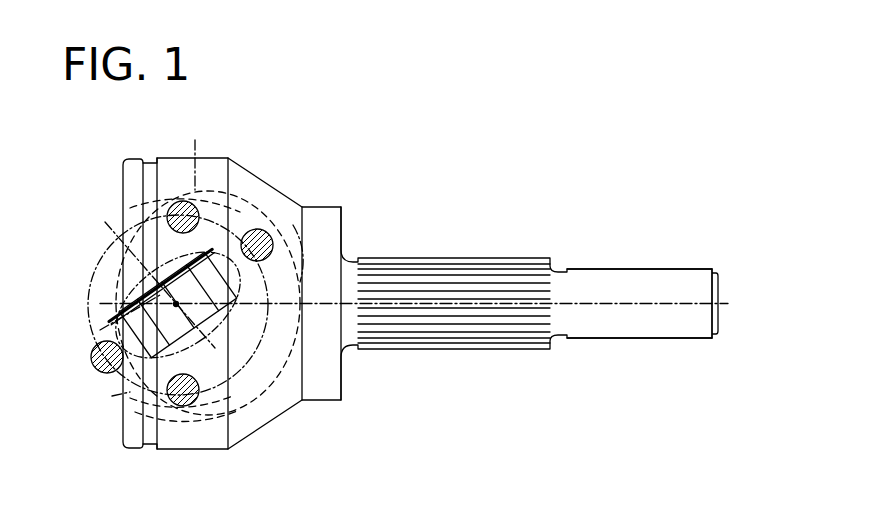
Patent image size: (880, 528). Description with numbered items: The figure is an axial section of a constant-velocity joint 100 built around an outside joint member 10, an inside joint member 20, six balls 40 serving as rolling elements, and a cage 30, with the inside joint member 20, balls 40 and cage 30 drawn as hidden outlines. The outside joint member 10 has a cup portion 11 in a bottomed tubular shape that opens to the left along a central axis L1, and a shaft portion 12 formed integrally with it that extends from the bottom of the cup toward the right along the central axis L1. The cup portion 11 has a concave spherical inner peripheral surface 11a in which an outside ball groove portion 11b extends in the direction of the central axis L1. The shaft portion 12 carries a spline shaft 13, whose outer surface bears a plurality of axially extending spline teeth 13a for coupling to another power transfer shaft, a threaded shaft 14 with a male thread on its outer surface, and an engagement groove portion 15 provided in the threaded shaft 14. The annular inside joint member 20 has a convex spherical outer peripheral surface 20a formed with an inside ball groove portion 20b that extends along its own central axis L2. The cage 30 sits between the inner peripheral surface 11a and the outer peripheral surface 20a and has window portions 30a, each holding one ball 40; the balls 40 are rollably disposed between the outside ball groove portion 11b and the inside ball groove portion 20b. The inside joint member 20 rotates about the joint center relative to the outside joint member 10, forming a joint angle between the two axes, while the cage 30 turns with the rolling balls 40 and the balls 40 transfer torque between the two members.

The constant-velocity joint 100 is at (651, 108).
The outside joint member 10 is at (654, 182).
The cup portion 11 is at (253, 183).
The inner peripheral surface 11a is at (303, 258).
The outside ball groove portion 11b is at (205, 425).
The shaft portion 12 is at (780, 234).
The spline shaft 13 is at (487, 246).
The spline teeth 13a is at (440, 350).
The threaded shaft 14 is at (629, 256).
The engagement groove portion 15 is at (688, 276).
The inside joint member 20 is at (191, 273).
The outer peripheral surface 20a is at (293, 225).
The inside ball groove portion 20b is at (125, 318).
The cage 30 is at (123, 205).
The window portions 30a is at (112, 396).
The balls 40 is at (195, 148).
The central axis L1 is at (727, 306).
The central axis L2 is at (105, 228).